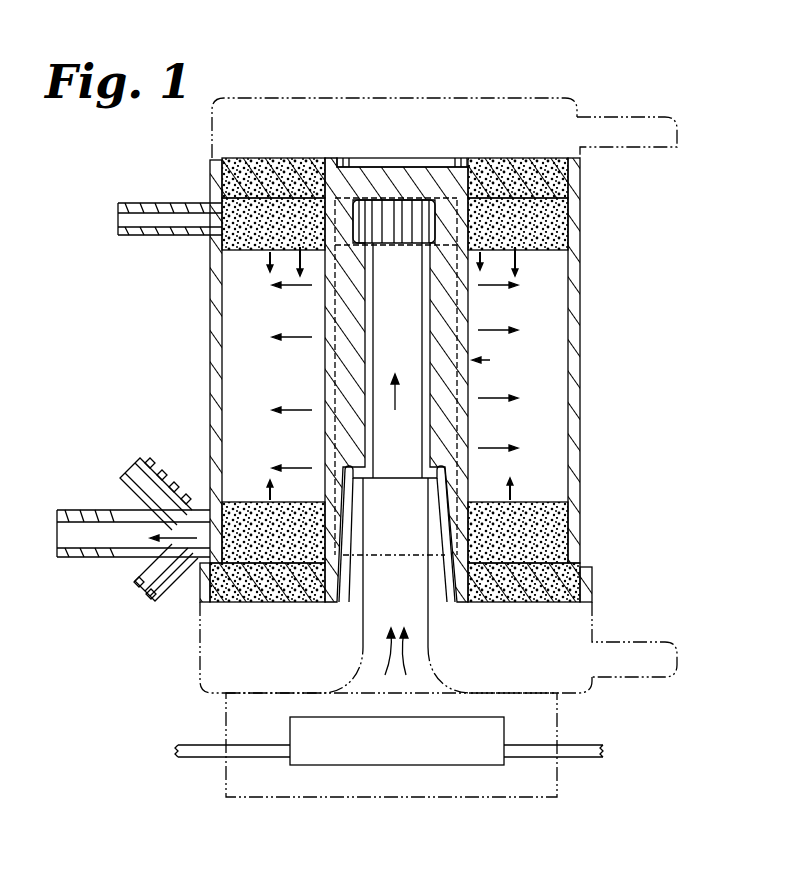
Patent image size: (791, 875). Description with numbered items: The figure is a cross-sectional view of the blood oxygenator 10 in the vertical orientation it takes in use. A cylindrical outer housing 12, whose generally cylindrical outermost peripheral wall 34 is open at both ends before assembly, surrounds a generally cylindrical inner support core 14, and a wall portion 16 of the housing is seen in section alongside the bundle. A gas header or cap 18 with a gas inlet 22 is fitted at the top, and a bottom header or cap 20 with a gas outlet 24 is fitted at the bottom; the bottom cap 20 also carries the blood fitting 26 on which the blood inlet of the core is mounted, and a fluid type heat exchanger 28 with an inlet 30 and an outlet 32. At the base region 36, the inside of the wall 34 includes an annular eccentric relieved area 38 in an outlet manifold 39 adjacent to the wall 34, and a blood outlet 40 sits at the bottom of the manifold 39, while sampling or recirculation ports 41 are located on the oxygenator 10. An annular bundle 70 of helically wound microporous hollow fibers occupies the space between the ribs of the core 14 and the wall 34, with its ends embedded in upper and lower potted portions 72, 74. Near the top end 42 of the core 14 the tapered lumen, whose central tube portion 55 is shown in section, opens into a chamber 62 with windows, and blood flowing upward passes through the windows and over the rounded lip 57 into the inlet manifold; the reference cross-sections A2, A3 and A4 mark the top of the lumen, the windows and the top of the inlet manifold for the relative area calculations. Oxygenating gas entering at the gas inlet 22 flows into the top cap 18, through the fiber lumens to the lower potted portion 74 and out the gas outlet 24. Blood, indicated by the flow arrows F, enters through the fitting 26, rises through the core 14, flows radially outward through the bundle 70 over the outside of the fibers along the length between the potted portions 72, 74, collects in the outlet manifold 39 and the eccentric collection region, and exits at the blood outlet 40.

The blood oxygenator 10 is at (627, 211).
The outer housing 12 is at (591, 474).
The inner support core 14 is at (548, 340).
The outer wall 16 is at (580, 422).
The gas header or cap 18 is at (272, 110).
The bottom header or cap 20 is at (598, 628).
The gas inlet 22 is at (640, 130).
The gas outlet 24 is at (650, 662).
The blood fitting 26 is at (352, 624).
The heat exchanger 28 is at (405, 766).
The heat exchanger inlet 30 is at (580, 760).
The heat exchanger outlet 32 is at (188, 760).
The outermost peripheral wall 34 is at (582, 358).
The base region 36 is at (578, 546).
The annular eccentric relieved area 38 is at (200, 508).
The outlet manifold 39 is at (215, 256).
The blood outlet 40 is at (122, 545).
The sampling or recirculation ports 41 is at (150, 203).
The top end of the core 42 is at (480, 282).
The central nozzle body 55 is at (470, 455).
The rounded lip 57 is at (372, 200).
The chamber 62 is at (398, 200).
The annular bundle 70 is at (268, 384).
The upper potted portion 72 is at (490, 200).
The lower potted portion 74 is at (540, 604).
The cross-section reference point A2 is at (388, 205).
The cross-section reference point A3 is at (404, 205).
The cross-section reference point A4 is at (440, 250).
The fluid flow F is at (558, 240).